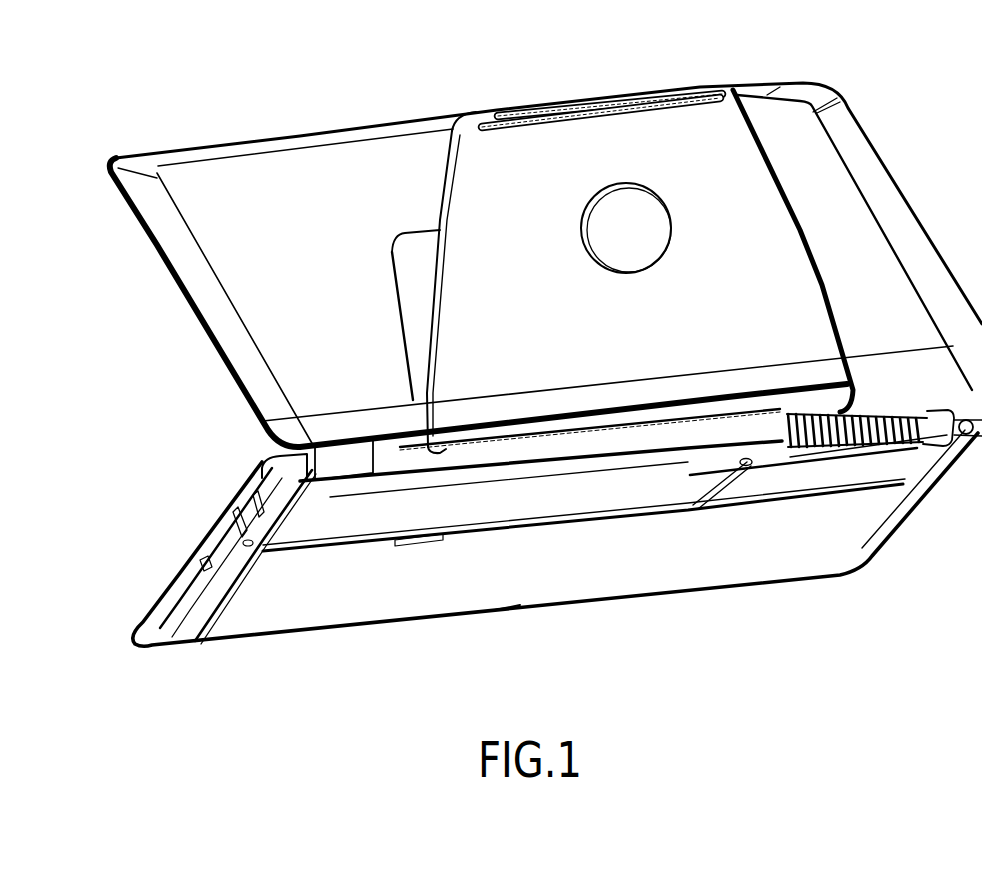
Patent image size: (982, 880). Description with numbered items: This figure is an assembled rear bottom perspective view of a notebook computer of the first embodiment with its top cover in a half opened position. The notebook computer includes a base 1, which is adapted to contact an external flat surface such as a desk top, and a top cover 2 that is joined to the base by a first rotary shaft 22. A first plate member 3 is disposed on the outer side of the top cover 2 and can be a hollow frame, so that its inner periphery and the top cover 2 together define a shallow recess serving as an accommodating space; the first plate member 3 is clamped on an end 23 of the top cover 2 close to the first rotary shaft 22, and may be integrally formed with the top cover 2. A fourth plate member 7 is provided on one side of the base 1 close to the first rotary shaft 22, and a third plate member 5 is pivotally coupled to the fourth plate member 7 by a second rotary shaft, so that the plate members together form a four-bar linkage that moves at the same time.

The base 1 is at (137, 607).
The top cover 2 is at (207, 142).
The first plate member 3 is at (395, 240).
The third plate member 5 is at (490, 112).
The fourth plate member 7 is at (497, 457).
The first rotary shaft 22 is at (330, 462).
The end of the top cover 23 is at (355, 441).